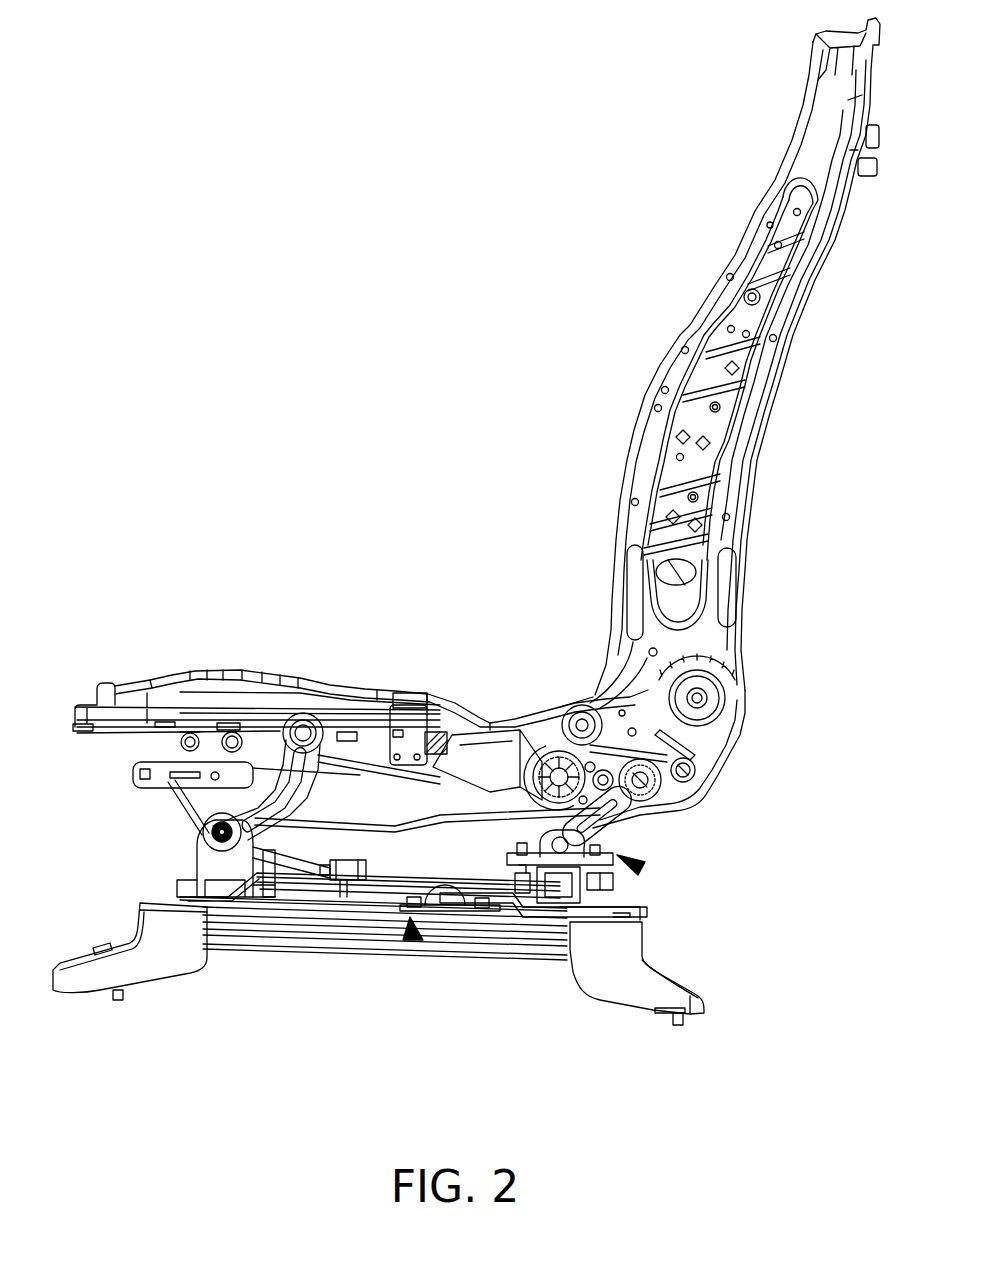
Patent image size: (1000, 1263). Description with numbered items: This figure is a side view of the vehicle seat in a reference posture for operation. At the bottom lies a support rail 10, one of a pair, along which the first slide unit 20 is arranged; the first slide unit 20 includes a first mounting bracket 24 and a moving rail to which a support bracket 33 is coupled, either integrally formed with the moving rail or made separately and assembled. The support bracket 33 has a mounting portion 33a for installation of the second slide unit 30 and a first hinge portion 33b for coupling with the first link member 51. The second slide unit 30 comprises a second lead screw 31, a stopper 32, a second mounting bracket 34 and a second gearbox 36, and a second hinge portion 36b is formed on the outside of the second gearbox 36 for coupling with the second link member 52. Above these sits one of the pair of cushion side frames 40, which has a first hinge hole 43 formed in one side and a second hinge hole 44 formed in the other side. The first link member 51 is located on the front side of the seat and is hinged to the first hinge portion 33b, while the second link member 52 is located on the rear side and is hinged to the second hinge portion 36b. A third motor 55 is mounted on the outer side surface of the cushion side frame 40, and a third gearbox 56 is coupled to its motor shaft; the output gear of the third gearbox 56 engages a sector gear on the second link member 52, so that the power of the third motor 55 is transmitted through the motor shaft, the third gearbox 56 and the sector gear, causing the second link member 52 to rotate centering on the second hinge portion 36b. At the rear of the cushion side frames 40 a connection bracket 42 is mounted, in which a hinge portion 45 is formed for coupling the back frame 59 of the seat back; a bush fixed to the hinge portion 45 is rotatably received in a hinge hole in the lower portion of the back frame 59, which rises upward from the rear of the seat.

The support rail 10 is at (262, 937).
The first slide unit 20 is at (410, 942).
The first mounting bracket 24 is at (462, 913).
The second slide unit 30 is at (648, 865).
The second lead screw 31 is at (383, 880).
The stopper 32 is at (342, 884).
The support bracket 33 is at (189, 829).
The mounting portion 33a is at (243, 862).
The first hinge portion 33b is at (203, 832).
The second mounting bracket 34 is at (522, 895).
The second gearbox 36 is at (656, 864).
The second hinge portion 36b is at (605, 838).
The cushion side frame 40 is at (270, 670).
The connection bracket 42 is at (703, 735).
The first hinge hole 43 is at (307, 728).
The second hinge hole 44 is at (700, 790).
The hinge portion 45 is at (722, 690).
The first link member 51 is at (232, 738).
The second link member 52 is at (588, 710).
The third motor 55 is at (470, 748).
The third gearbox 56 is at (552, 770).
The back frame 59 is at (768, 370).